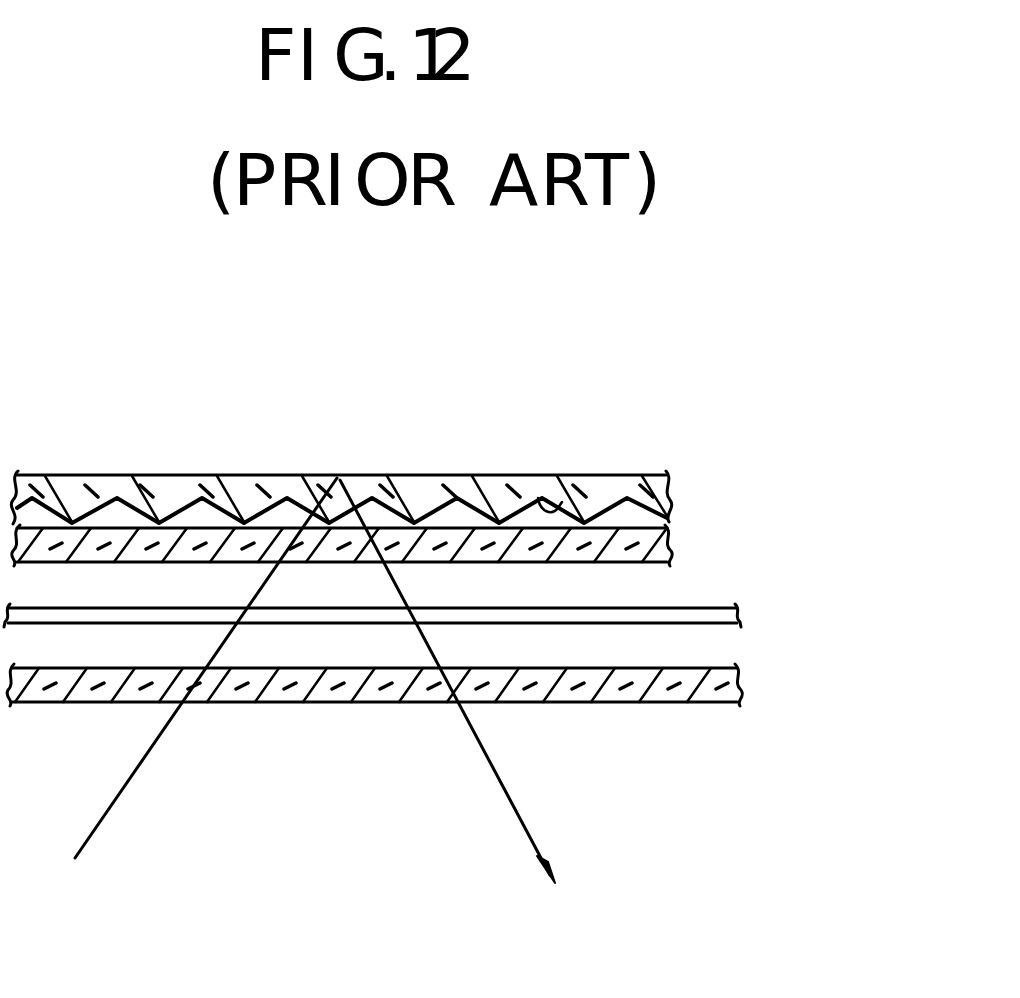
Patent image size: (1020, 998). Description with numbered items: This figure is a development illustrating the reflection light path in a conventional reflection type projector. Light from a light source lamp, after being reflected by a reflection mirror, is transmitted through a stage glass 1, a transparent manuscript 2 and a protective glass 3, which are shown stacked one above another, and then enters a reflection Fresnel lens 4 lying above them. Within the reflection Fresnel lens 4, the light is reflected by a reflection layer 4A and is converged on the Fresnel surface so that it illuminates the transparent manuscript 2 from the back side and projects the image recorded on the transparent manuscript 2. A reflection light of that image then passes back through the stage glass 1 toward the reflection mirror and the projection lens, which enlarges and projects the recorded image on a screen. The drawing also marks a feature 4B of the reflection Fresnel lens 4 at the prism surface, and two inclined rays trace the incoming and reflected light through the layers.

The stage glass 1 is at (737, 677).
The transparent manuscript 2 is at (726, 610).
The protective glass 3 is at (670, 542).
The reflection Fresnel lens 4 is at (405, 426).
The reflection layer 4A is at (377, 477).
The groove between prisms 4B is at (551, 420).